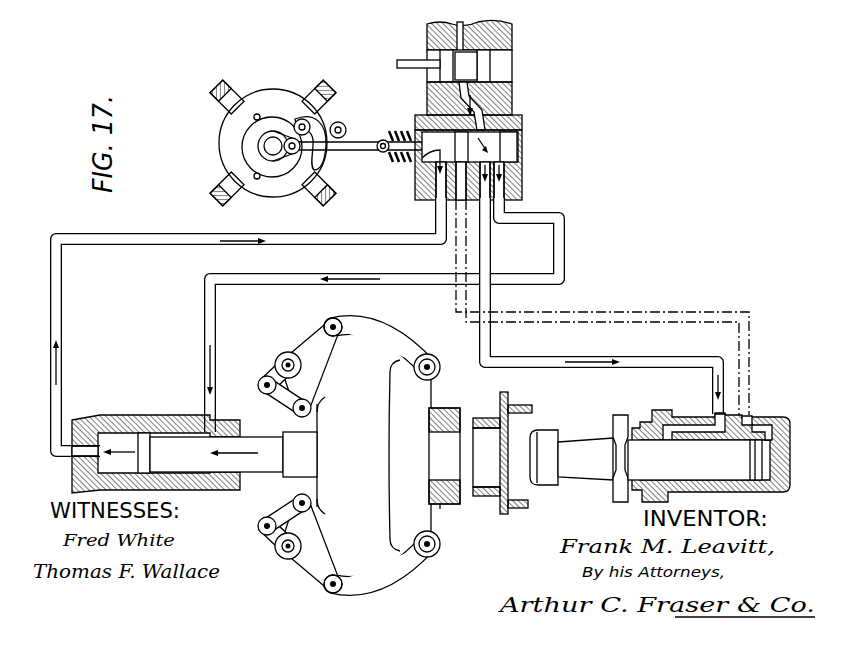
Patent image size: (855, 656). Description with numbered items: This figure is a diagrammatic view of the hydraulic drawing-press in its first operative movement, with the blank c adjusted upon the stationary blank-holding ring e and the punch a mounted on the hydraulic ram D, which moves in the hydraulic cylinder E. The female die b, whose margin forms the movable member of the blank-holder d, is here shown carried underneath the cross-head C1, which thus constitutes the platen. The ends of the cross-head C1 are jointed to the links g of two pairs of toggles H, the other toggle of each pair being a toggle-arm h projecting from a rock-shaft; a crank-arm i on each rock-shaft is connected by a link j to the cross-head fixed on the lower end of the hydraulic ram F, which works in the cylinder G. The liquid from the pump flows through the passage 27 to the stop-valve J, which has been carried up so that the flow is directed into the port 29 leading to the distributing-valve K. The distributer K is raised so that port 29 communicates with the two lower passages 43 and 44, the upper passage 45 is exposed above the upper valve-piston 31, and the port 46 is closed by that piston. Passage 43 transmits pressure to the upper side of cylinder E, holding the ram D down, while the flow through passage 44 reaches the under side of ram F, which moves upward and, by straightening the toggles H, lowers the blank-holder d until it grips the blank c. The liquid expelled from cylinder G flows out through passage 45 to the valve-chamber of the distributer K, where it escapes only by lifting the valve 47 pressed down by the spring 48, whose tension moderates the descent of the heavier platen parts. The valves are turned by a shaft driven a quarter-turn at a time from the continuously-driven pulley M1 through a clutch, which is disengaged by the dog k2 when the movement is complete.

The continuously-driven pulley M1 is at (280, 104).
The dog k2 is at (328, 158).
The valve 47 is at (418, 163).
The spring 48 is at (390, 163).
The stop-valve J is at (469, 75).
The upper valve-piston 31 is at (458, 66).
The port or passage 27 is at (460, 72).
The port 29 is at (488, 100).
The distributing-valve K is at (484, 165).
The upper passage 45 is at (56, 300).
The lower passage 44 is at (206, 322).
The passage 43 is at (597, 371).
The port or passage 46 is at (633, 313).
The cylinder G is at (120, 414).
The hydraulic plunger or ram F is at (190, 445).
The cross-head C1 is at (357, 455).
The link g is at (400, 347).
The toggle H is at (310, 455).
The toggle-arm h is at (324, 324).
The crank-arm i is at (274, 372).
The link j is at (280, 402).
The female die b is at (444, 456).
The blank c is at (452, 456).
The blank-holder d is at (445, 505).
The ring e is at (502, 453).
The punch or male die a is at (579, 458).
The hydraulic cylinder E is at (772, 492).
The hydraulic ram or plunger D is at (695, 460).